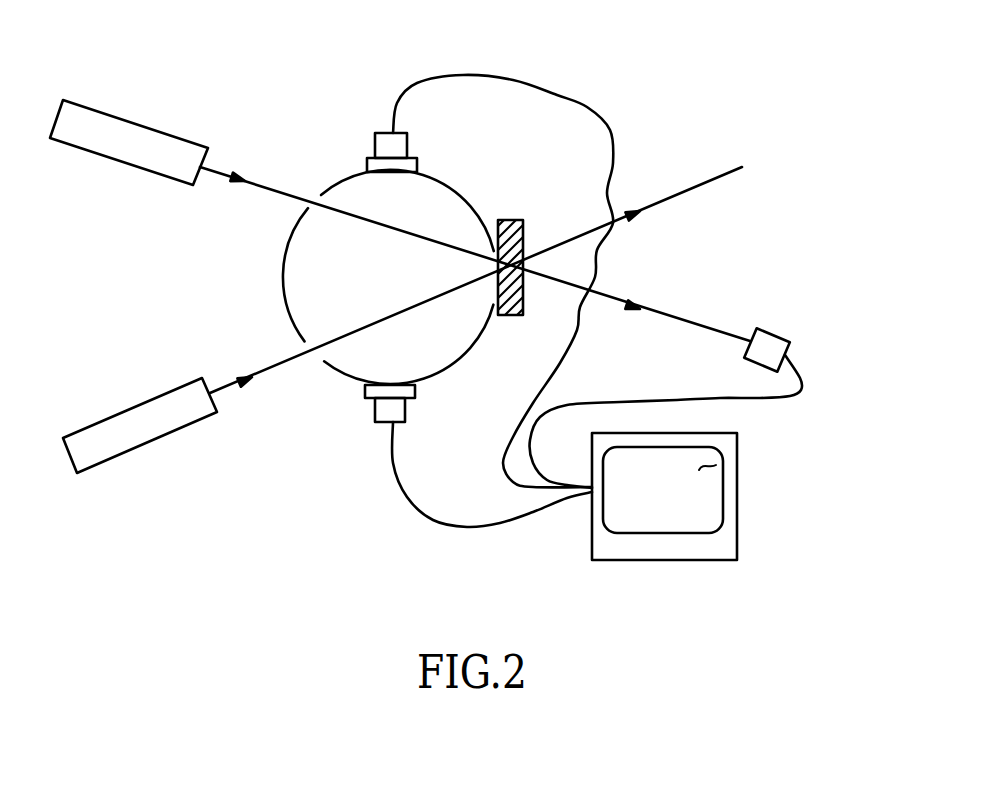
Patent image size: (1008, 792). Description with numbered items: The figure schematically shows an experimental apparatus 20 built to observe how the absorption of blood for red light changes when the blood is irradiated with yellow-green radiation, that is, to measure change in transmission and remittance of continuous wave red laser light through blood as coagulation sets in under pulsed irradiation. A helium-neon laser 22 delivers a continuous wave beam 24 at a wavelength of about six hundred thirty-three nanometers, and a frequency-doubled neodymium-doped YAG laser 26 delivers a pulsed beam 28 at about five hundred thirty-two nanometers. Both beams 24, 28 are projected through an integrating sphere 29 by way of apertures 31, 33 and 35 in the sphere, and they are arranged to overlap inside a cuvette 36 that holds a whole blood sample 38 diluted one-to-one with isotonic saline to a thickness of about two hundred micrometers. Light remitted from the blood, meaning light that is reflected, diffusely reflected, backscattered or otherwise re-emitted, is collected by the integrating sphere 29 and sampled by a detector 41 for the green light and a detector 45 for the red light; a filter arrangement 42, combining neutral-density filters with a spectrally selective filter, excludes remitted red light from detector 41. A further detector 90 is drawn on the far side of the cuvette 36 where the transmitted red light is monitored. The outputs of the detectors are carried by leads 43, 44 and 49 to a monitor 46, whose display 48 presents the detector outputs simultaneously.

The experimental apparatus 20 is at (313, 504).
The helium-neon laser 22 is at (146, 116).
The beam 24 is at (275, 188).
The frequency-doubled Nd:YAG laser 26 is at (147, 454).
The beam 28 is at (270, 373).
The integrating sphere 29 is at (469, 174).
The aperture 31 is at (317, 197).
The aperture 33 is at (321, 358).
The aperture 35 is at (485, 285).
The cuvette 36 is at (523, 237).
The whole blood sample 38 is at (513, 220).
The detector 41 is at (417, 163).
The filter arrangement 42 is at (418, 390).
The lead 43 is at (783, 395).
The lead 44 is at (480, 528).
The detector 45 is at (388, 145).
The monitor 46 is at (748, 510).
The display 48 is at (721, 460).
The lead 49 is at (573, 90).
The photodetector 90 is at (779, 334).